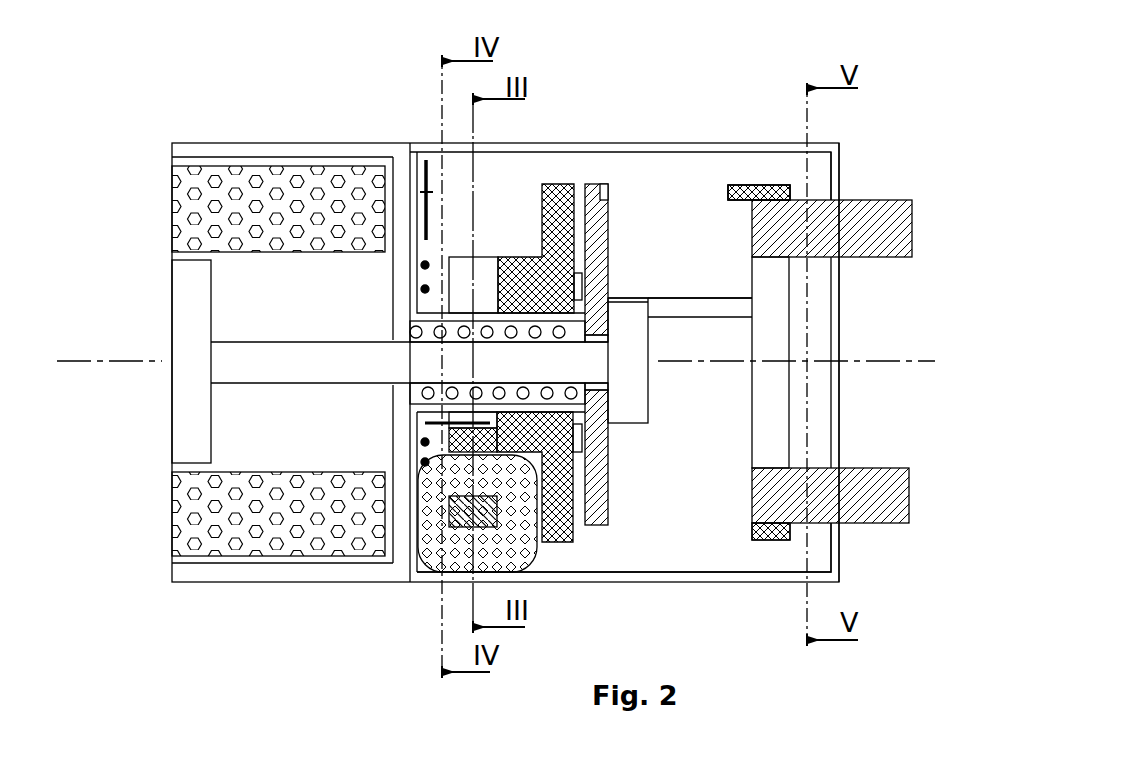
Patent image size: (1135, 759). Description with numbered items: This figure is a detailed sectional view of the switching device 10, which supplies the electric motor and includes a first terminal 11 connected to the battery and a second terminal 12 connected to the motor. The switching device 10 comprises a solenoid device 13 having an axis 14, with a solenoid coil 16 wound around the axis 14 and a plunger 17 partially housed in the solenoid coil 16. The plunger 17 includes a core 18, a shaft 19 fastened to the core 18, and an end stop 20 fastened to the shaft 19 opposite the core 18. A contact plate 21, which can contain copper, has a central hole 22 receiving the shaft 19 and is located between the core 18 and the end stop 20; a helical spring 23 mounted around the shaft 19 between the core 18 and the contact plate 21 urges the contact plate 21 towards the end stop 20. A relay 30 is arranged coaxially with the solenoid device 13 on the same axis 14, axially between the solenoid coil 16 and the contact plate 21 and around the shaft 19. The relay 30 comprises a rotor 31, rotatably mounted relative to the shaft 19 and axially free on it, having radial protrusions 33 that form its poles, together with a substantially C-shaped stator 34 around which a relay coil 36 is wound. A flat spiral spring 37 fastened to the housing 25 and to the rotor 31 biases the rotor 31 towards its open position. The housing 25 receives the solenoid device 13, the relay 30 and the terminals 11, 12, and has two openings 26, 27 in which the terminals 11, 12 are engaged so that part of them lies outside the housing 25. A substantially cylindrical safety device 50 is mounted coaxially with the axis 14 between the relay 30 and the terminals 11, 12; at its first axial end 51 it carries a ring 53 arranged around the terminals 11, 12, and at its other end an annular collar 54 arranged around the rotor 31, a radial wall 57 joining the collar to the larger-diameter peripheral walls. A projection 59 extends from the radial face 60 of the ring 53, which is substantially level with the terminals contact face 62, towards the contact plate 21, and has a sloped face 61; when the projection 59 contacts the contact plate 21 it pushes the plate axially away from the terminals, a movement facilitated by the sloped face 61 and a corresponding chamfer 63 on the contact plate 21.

The switching device 10 is at (312, 627).
The first terminal 11 is at (890, 210).
The second terminal 12 is at (890, 482).
The solenoid device 13 is at (268, 156).
The axis 14 is at (80, 361).
The solenoid coil 16 is at (222, 200).
The plunger 17 is at (154, 381).
The core 18 is at (193, 434).
The shaft 19 is at (292, 383).
The end stop 20 is at (633, 403).
The contact plate 21 is at (600, 497).
The central hole 22 is at (597, 382).
The helical spring 23 is at (408, 332).
The housing 25 is at (710, 148).
The opening 26 is at (840, 198).
The opening 27 is at (840, 525).
The relay 30 is at (519, 192).
The rotor 31 is at (485, 236).
The radial protrusion 33 is at (457, 263).
The stator 34 is at (460, 527).
The relay coil 36 is at (513, 547).
The flat spiral spring 37 is at (425, 220).
The safety device 50 is at (558, 174).
The first axial end 51 is at (800, 190).
The ring 53 is at (780, 540).
The annular collar 54 is at (448, 442).
The radial wall 57 is at (555, 532).
The projection 59 is at (745, 188).
The radial face 60 is at (743, 530).
The sloped face 61 is at (728, 192).
The terminals contact face 62 is at (752, 227).
The chamfer 63 is at (607, 190).